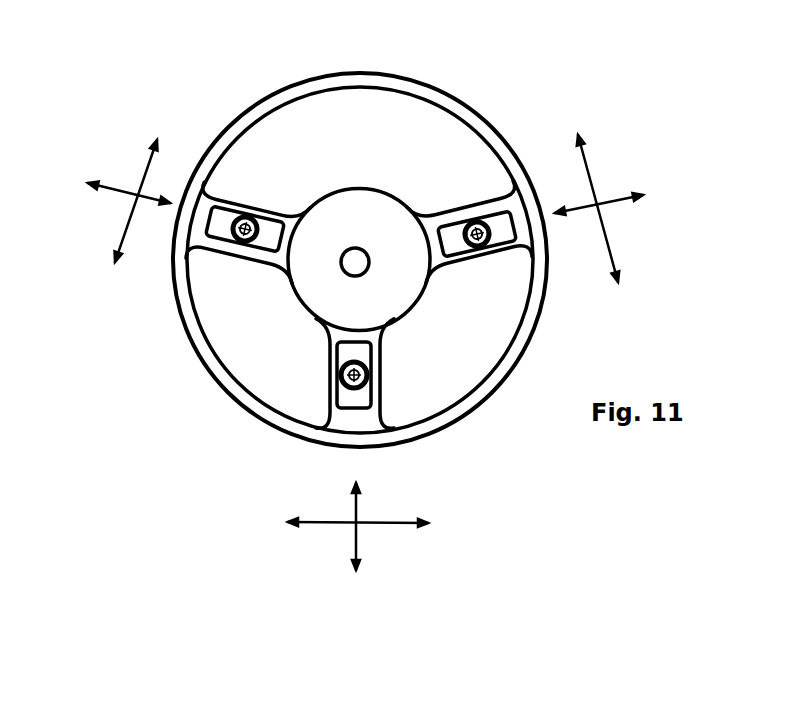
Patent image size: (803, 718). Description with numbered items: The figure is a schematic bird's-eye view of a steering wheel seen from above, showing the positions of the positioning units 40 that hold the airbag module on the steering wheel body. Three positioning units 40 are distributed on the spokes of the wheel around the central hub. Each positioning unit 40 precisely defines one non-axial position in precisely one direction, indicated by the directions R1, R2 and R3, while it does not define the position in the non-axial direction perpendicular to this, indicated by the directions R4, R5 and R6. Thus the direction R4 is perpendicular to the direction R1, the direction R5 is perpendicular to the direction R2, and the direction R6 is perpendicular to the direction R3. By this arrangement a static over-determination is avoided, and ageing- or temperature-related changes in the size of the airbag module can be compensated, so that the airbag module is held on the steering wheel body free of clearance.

The positioning unit 40 is at (245, 212).
The direction R1 is at (147, 185).
The direction R2 is at (591, 190).
The direction R3 is at (376, 529).
The direction R4 is at (119, 174).
The direction R5 is at (617, 195).
The direction R6 is at (368, 539).